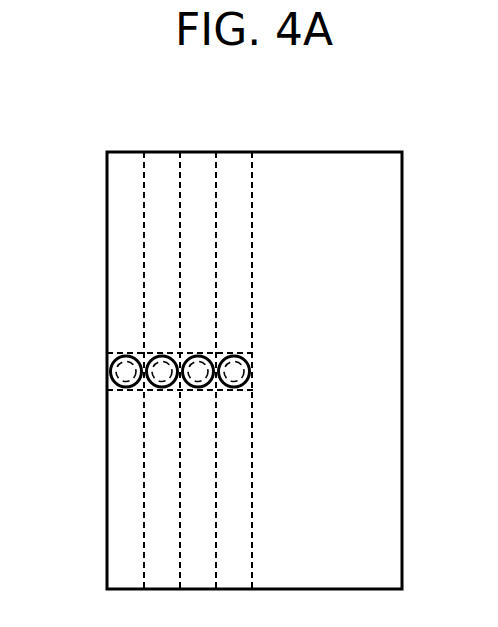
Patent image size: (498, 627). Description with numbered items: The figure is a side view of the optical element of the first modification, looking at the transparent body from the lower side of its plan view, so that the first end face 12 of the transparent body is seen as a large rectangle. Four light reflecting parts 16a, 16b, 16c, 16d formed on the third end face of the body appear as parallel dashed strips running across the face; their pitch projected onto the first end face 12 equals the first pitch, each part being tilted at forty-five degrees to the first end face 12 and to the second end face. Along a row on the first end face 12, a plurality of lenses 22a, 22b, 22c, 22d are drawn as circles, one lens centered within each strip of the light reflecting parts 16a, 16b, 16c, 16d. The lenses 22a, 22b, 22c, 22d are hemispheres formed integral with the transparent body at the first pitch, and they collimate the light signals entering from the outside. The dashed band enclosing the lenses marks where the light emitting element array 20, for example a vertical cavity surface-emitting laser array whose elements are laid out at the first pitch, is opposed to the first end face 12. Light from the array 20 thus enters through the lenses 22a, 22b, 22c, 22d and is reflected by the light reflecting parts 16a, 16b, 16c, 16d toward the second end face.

The first end face 12 is at (392, 303).
The light reflecting part 16a is at (123, 167).
The light reflecting part 16b is at (155, 167).
The light reflecting part 16c is at (190, 167).
The light reflecting part 16d is at (237, 166).
The light emitting element array 20 is at (245, 351).
The lens 22a is at (107, 389).
The lens 22b is at (144, 390).
The lens 22c is at (181, 390).
The lens 22d is at (217, 390).